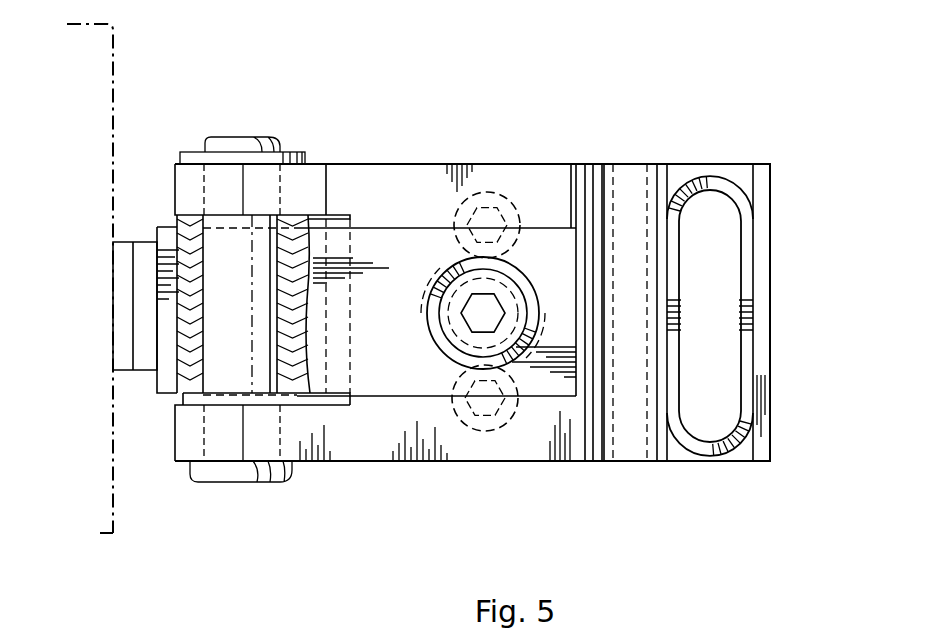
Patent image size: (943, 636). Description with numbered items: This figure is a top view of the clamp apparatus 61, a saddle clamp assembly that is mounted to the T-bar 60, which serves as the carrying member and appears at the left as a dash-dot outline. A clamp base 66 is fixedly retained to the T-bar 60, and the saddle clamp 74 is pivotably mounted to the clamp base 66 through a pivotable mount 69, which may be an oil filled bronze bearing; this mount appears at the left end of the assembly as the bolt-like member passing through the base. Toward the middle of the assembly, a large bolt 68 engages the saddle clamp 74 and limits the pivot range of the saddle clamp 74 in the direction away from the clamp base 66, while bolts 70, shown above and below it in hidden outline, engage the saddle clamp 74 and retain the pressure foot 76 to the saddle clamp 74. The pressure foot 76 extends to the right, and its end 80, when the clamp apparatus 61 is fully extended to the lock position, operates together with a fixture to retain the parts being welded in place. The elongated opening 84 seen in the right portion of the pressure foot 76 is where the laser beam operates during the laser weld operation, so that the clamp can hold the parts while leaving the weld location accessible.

The T-bar 60 is at (113, 517).
The clamp apparatus 61 is at (633, 133).
The clamp base 66 is at (368, 247).
The bolt 68 is at (457, 262).
The pivotable mount 69 is at (258, 157).
The bolt 70 is at (494, 200).
The saddle clamp 74 is at (367, 440).
The pressure foot 76 is at (623, 432).
The end of pressure foot 80 is at (752, 438).
The opening 84 is at (735, 250).